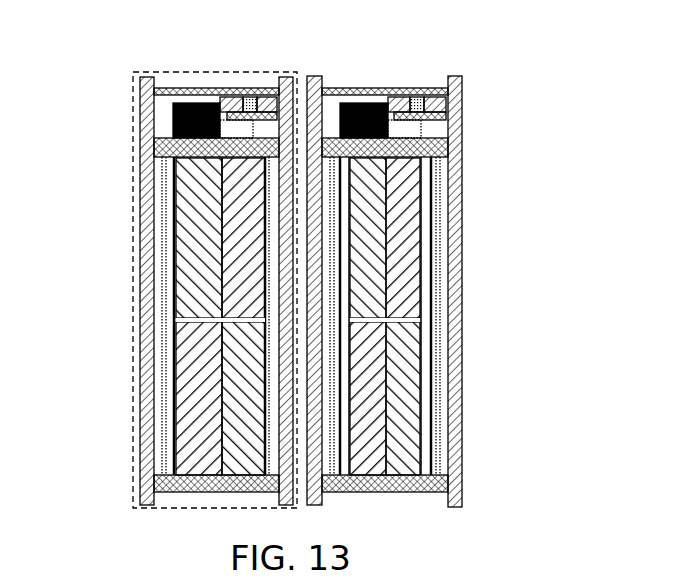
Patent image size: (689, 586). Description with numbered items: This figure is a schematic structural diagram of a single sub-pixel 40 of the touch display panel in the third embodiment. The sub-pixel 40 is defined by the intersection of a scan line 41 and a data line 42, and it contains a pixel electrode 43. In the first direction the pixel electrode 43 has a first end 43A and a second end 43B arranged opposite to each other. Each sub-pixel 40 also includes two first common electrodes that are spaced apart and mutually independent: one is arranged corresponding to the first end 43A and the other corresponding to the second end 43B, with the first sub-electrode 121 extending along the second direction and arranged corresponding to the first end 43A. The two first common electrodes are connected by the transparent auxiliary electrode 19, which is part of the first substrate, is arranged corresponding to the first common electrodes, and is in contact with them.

The sub-pixel 40 is at (133, 72).
The first sub-electrode 121 is at (155, 158).
The transparent auxiliary electrode 19 is at (190, 288).
The scan line 41 is at (433, 93).
The data line 42 is at (455, 97).
The first end 43A is at (428, 160).
The pixel electrode 43 is at (427, 316).
The second end 43B is at (420, 463).